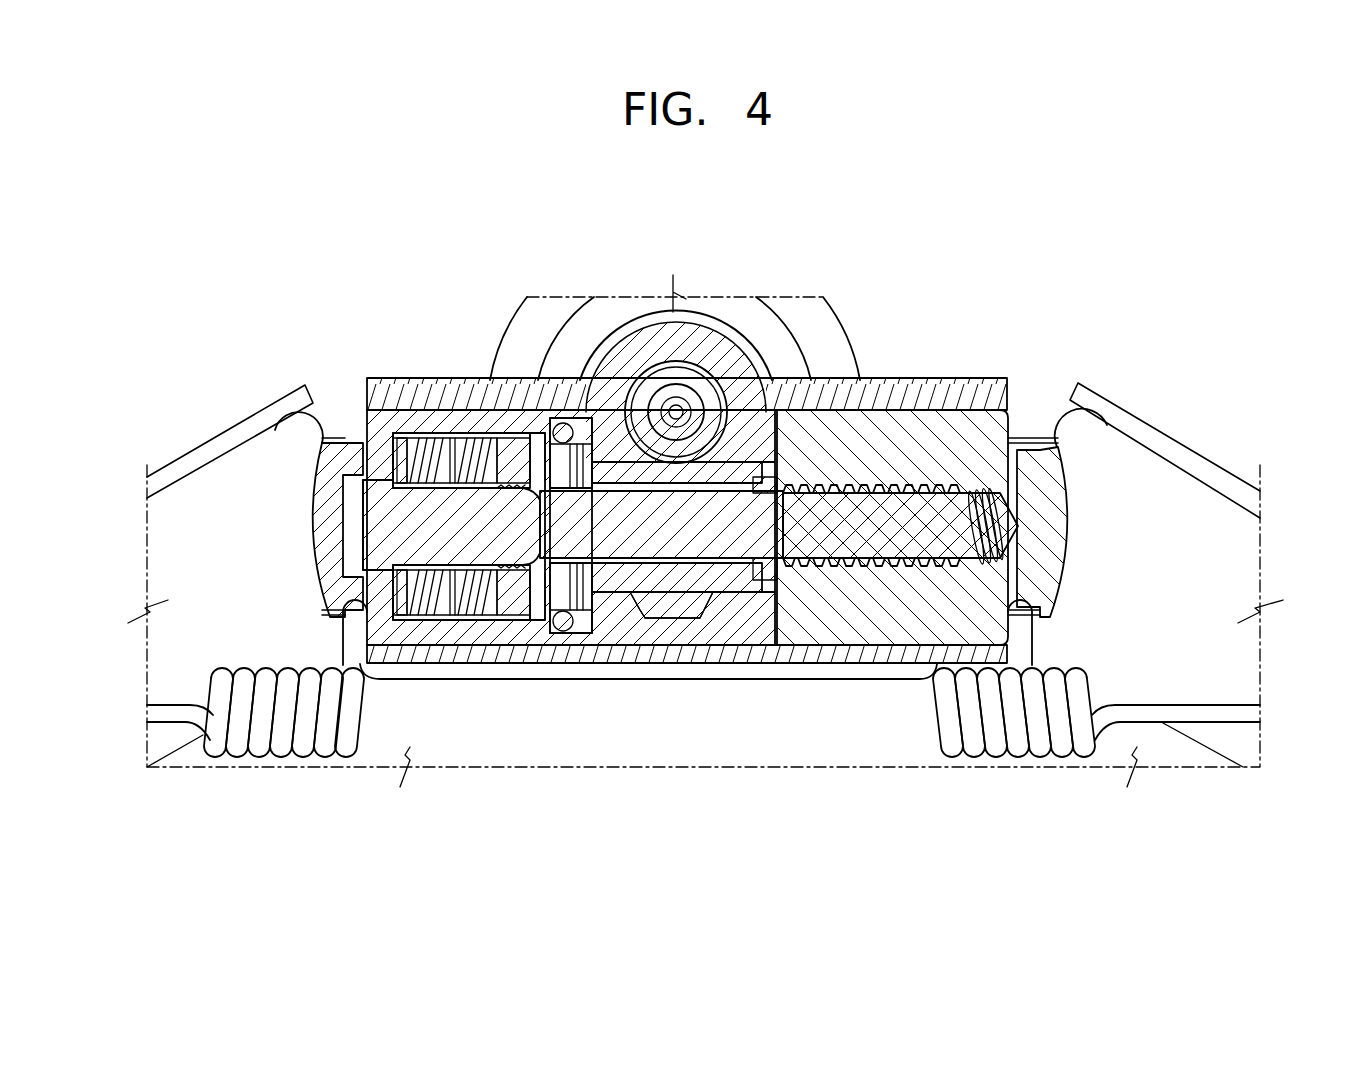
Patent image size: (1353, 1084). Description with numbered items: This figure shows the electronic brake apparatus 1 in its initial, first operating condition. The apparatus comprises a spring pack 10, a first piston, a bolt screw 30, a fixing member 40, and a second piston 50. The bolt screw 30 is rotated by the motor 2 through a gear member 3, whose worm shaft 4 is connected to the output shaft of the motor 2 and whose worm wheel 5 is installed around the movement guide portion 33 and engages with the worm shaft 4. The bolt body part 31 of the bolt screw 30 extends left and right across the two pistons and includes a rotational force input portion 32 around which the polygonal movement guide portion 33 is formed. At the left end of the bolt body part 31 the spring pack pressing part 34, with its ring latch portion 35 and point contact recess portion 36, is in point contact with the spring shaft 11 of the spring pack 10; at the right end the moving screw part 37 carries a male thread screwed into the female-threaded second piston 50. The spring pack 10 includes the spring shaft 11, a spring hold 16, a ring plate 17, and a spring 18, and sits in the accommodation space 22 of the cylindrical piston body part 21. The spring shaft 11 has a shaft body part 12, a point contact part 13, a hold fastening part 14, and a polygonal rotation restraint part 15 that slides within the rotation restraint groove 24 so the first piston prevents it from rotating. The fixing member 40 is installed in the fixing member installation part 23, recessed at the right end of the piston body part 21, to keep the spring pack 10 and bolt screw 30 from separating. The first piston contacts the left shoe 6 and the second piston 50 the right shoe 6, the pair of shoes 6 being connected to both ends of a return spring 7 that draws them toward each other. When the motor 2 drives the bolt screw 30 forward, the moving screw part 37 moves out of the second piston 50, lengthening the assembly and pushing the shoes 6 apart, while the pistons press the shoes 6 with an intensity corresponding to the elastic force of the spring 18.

The electronic brake apparatus 1 is at (1005, 327).
The motor 2 is at (817, 337).
The gear member 3 is at (689, 319).
The worm shaft 4 is at (680, 385).
The worm wheel 5 is at (708, 430).
The shoe 6 is at (1218, 592).
The return spring 7 is at (1084, 745).
The spring pack 10 is at (355, 541).
The spring shaft 11 is at (432, 671).
The shaft body part 12 is at (440, 600).
The point contact part 13 is at (517, 600).
The hold fastening part 14 is at (477, 600).
The rotation restraint part 15 is at (336, 633).
The spring hold 16 is at (520, 450).
The ring plate 17 is at (417, 520).
The spring 18 is at (447, 472).
The piston body part 21 is at (524, 625).
The accommodation space 22 is at (355, 450).
The fixing member installation part 23 is at (608, 662).
The rotation restraint groove 24 is at (352, 514).
The bolt screw 30 is at (897, 628).
The bolt body part 31 is at (684, 682).
The rotational force input portion 32 is at (717, 607).
The movement guide portion 33 is at (635, 605).
The spring pack pressing part 34 is at (536, 406).
The ring latch portion 35 is at (574, 455).
The point contact recess portion 36 is at (530, 445).
The moving screw part 37 is at (875, 540).
The fixing member 40 is at (578, 440).
The second piston 50 is at (988, 700).